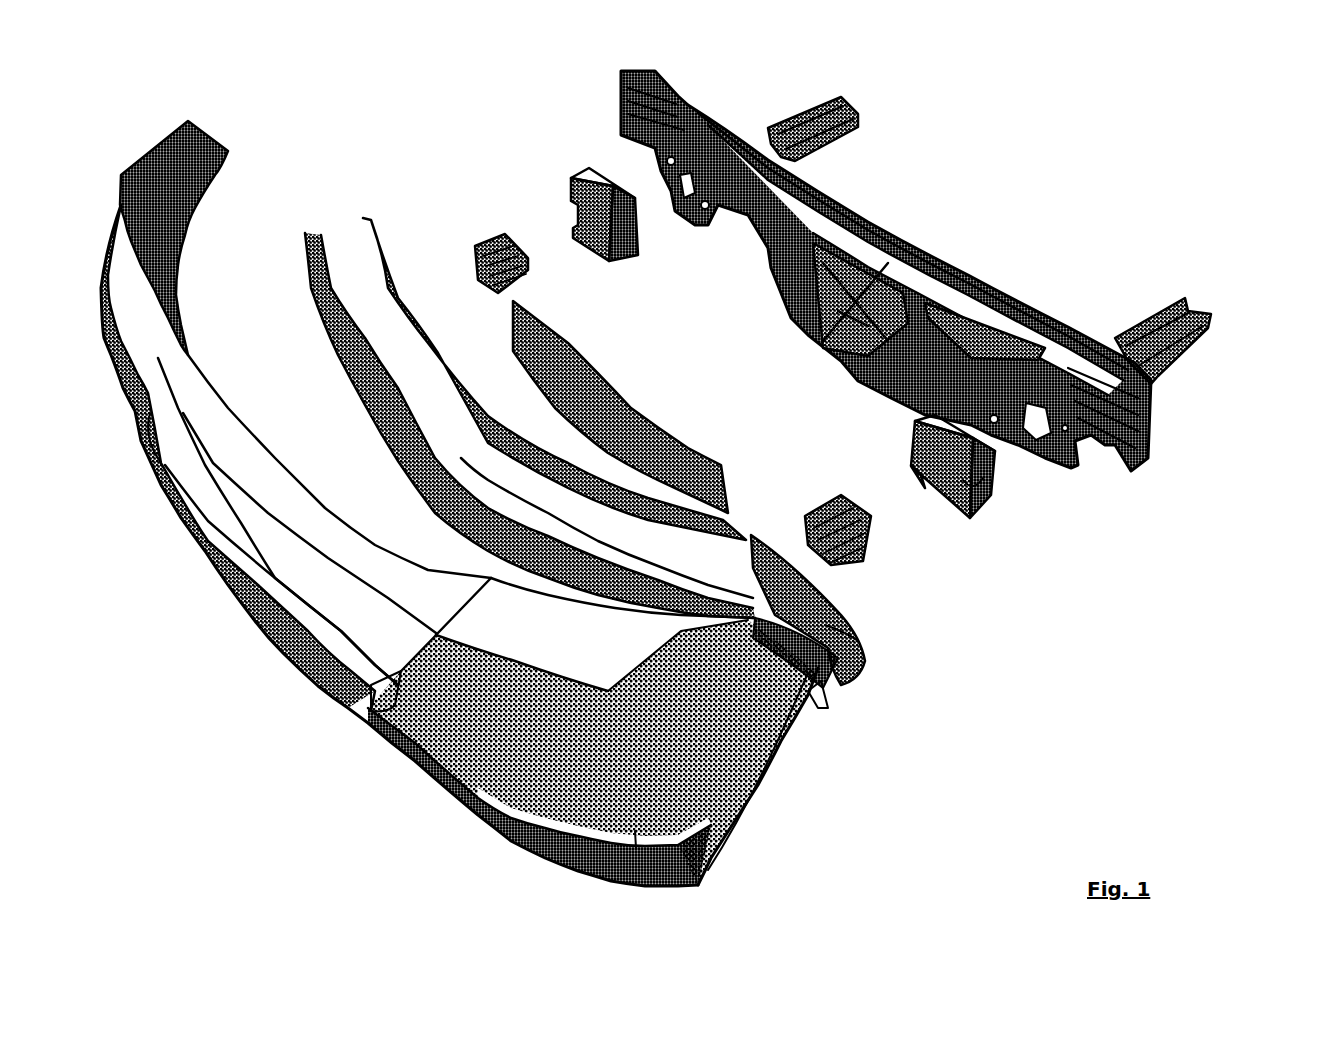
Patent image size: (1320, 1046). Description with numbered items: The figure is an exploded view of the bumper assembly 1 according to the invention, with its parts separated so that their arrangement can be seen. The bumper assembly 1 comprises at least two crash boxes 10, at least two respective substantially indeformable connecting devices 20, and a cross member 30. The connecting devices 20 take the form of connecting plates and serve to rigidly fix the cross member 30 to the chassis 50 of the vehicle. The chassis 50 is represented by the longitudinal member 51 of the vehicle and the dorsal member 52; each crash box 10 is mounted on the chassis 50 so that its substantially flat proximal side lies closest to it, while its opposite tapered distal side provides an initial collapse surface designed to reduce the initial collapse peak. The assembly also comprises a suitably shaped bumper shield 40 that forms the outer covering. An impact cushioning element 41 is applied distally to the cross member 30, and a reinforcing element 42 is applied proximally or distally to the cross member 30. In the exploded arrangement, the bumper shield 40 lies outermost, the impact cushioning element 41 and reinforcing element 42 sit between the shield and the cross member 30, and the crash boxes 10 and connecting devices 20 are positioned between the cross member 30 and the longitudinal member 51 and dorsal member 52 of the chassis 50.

The bumper assembly 1 is at (426, 116).
The crash box 10 is at (518, 262).
The connecting device 20 is at (632, 243).
The cross member 30 is at (878, 638).
The bumper shield 40 is at (770, 798).
The impact cushioning element 41 is at (288, 262).
The reinforcing element 42 is at (655, 391).
The chassis 50 is at (1125, 250).
The longitudinal member 51 is at (835, 130).
The dorsal member 52 is at (1135, 440).